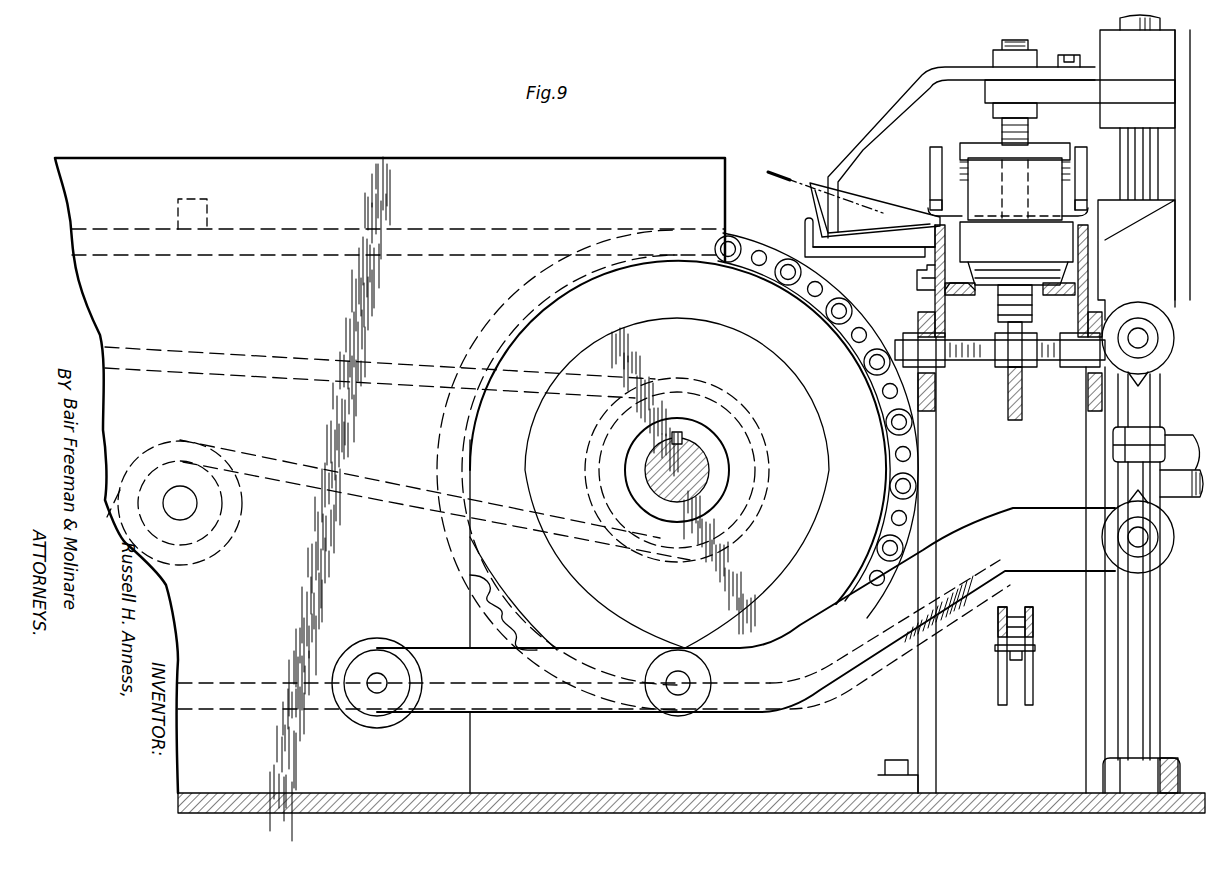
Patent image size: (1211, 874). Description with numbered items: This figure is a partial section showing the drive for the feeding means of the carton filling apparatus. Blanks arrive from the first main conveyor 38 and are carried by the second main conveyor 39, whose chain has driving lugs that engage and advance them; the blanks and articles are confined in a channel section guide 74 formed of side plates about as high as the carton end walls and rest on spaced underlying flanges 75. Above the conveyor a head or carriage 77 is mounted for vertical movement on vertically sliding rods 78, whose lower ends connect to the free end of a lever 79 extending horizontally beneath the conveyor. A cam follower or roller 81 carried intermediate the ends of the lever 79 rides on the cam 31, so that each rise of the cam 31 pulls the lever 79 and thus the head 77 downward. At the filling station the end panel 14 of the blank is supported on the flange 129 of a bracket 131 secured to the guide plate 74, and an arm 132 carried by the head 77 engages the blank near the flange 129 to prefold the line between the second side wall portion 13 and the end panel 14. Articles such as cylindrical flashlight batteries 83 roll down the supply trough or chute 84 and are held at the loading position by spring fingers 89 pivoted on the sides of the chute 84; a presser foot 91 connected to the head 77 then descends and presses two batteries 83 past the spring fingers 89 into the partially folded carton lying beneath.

The second side wall portion 13 is at (885, 212).
The end wall portion 14 is at (815, 180).
The cam 31 is at (805, 522).
The first main conveyor 38 is at (892, 434).
The second main conveyor 39 is at (1000, 308).
The channel section guide 74 is at (930, 272).
The flanges 75 is at (952, 290).
The head or carriage 77 is at (1065, 88).
The vertically sliding rods 78 is at (1145, 402).
The lever 79 is at (977, 526).
The cam follower or roller 81 is at (690, 705).
The cylindrical flashlight batteries 83 is at (978, 150).
The supply trough or chute 84 is at (930, 151).
The spring fingers 89 is at (935, 212).
The presser foot 91 is at (1048, 216).
The flange 129 is at (805, 225).
The bracket 131 is at (840, 255).
The arm 132 is at (900, 86).